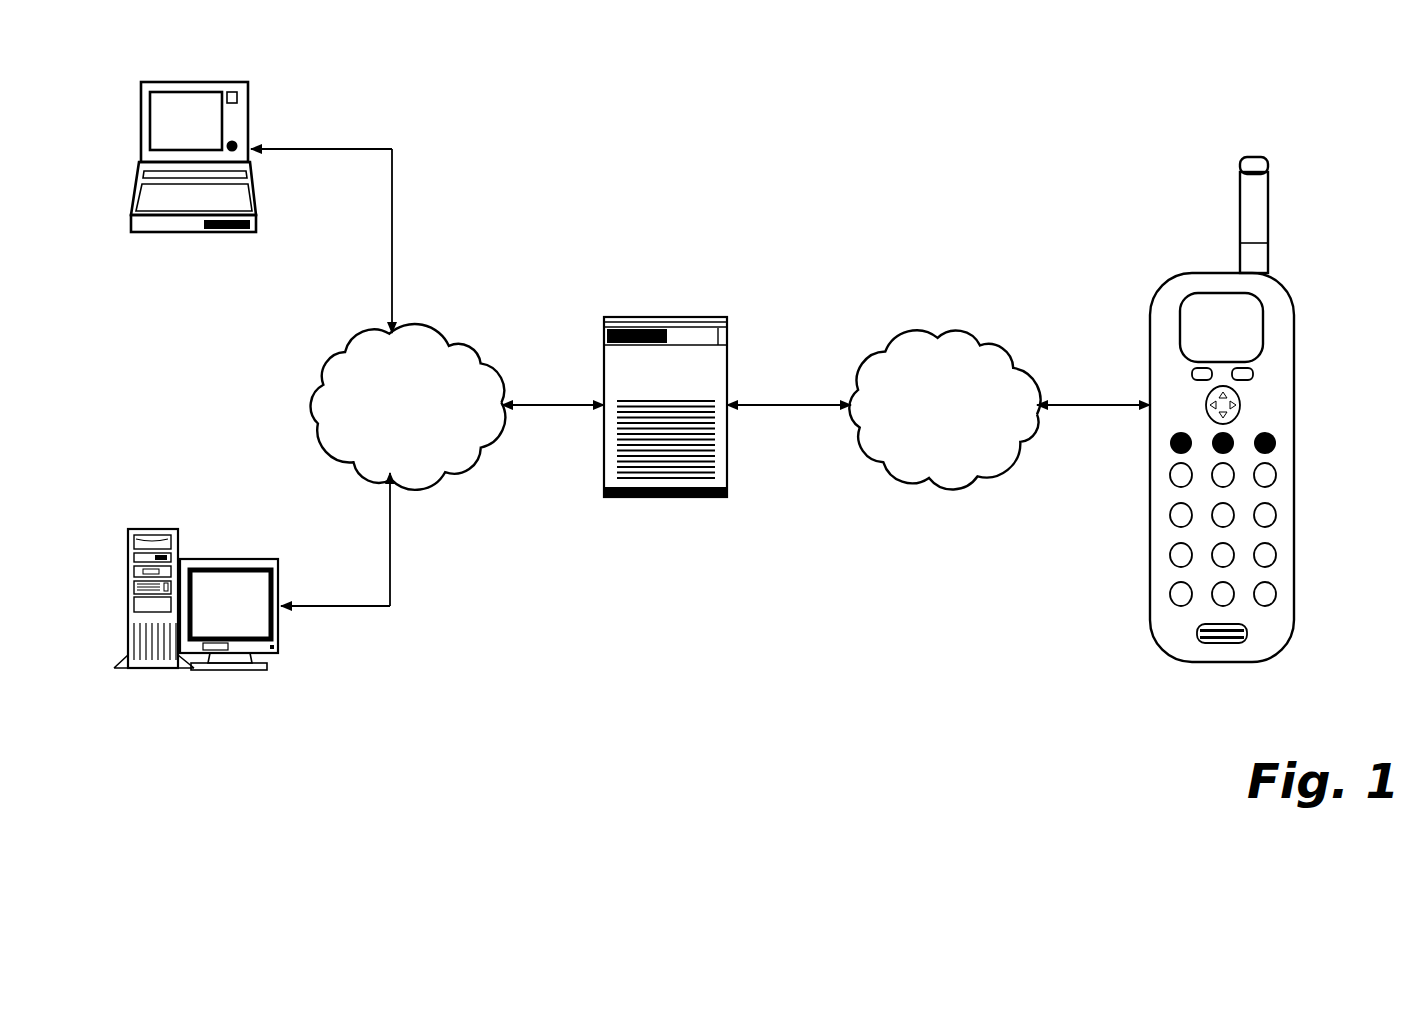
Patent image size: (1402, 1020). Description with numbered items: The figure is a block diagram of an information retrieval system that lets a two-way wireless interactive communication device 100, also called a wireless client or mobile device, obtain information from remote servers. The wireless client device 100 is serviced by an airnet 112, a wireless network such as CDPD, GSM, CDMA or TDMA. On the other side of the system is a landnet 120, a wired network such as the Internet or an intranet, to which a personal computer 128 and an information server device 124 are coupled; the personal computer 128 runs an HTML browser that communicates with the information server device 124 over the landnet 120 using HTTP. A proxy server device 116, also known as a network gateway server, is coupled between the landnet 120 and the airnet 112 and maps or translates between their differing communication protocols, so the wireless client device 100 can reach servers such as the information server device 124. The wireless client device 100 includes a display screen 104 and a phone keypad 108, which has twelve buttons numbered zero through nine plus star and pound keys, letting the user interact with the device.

The two-way wireless interactive communication device 100 is at (1261, 409).
The display screen 104 is at (1262, 331).
The phone keypad 108 is at (1272, 547).
The airnet 112 is at (1010, 338).
The proxy server device 116 is at (727, 323).
The landnet 120 is at (437, 333).
The information server device 124 is at (156, 527).
The personal computer 128 is at (250, 119).